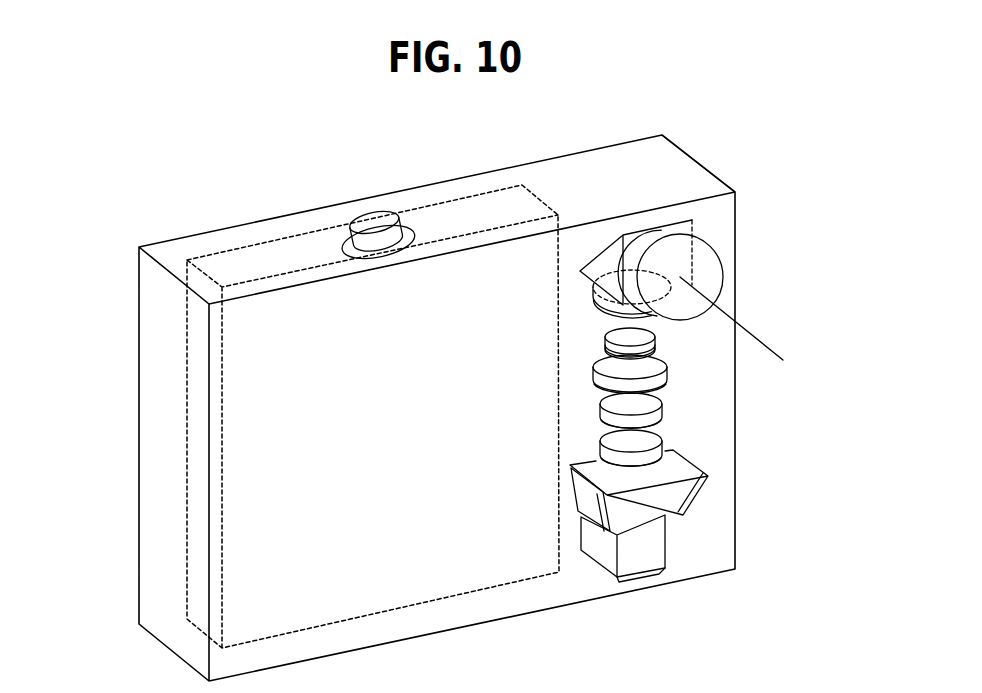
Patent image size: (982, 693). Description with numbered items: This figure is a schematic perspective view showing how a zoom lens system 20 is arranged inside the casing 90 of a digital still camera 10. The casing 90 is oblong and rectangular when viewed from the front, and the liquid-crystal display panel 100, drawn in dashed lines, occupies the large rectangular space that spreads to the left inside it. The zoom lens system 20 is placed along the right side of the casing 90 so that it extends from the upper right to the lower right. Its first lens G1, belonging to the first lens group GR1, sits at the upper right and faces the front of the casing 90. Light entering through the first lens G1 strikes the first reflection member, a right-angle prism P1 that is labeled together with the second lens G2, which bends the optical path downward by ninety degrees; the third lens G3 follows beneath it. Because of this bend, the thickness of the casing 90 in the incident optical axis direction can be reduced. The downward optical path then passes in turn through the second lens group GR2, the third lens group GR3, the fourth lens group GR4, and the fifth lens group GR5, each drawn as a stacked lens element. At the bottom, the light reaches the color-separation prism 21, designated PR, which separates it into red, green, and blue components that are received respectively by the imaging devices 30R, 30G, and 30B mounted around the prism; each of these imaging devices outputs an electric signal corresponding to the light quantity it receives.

The digital still camera 10 is at (250, 208).
The casing 90 is at (185, 232).
The liquid-crystal display panel 100 is at (185, 340).
The zoom lens system 20 is at (580, 422).
The first lens group GR1 is at (716, 221).
The first reflection member (right-angle prism) P1 is at (603, 258).
The second lens G2 is at (636, 262).
The first lens G1 is at (713, 265).
The third lens G3 is at (613, 317).
The second lens group GR2 is at (672, 342).
The third lens group GR3 is at (678, 375).
The fourth lens group GR4 is at (675, 410).
The fifth lens group GR5 is at (677, 438).
The color-separation prism 21 is at (680, 463).
The prism PR is at (639, 482).
The imaging device (blue) 30B is at (580, 497).
The imaging device (green) 30G is at (700, 498).
The imaging device (red) 30R is at (645, 578).